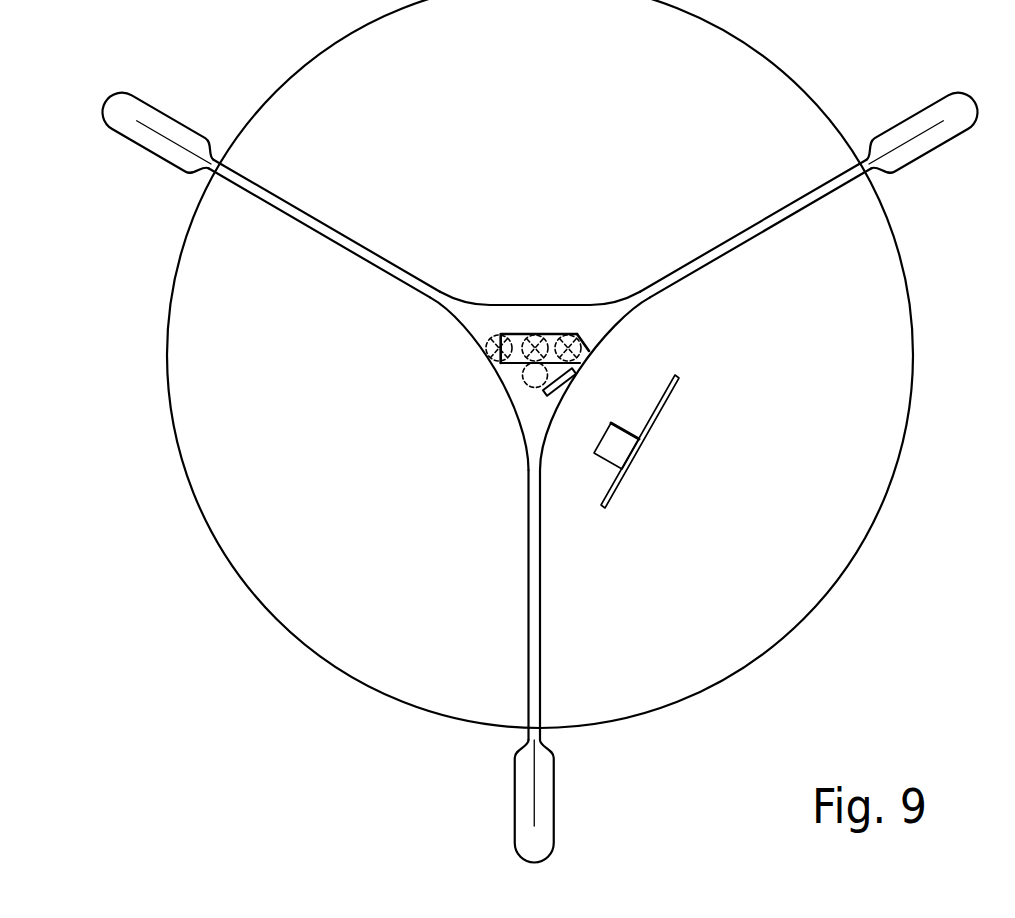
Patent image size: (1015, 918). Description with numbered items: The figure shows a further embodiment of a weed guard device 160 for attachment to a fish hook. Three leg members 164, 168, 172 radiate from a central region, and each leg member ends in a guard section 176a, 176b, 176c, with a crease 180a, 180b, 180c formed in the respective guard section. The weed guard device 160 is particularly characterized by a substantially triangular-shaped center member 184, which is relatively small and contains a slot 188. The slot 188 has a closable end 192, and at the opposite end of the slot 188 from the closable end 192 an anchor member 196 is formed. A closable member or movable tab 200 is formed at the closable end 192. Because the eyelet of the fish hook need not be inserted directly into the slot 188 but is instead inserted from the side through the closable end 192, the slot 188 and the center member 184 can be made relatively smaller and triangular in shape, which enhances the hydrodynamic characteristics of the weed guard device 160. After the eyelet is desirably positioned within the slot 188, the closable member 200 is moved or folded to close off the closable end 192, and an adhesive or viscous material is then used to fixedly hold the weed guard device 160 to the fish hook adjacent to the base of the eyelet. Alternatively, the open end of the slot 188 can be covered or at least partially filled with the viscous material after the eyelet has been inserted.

The weed guard device 160 is at (607, 240).
The leg member 164 is at (330, 241).
The leg member 168 is at (541, 621).
The leg member 172 is at (752, 242).
The guard section 176a is at (157, 112).
The guard section 176b is at (514, 787).
The guard section 176c is at (910, 163).
The crease 180a is at (186, 150).
The crease 180b is at (534, 818).
The crease 180c is at (907, 142).
The center member 184 is at (543, 323).
The slot 188 is at (491, 369).
The closable end 192 is at (594, 354).
The anchor member 196 is at (487, 348).
The closable member 200 is at (576, 375).